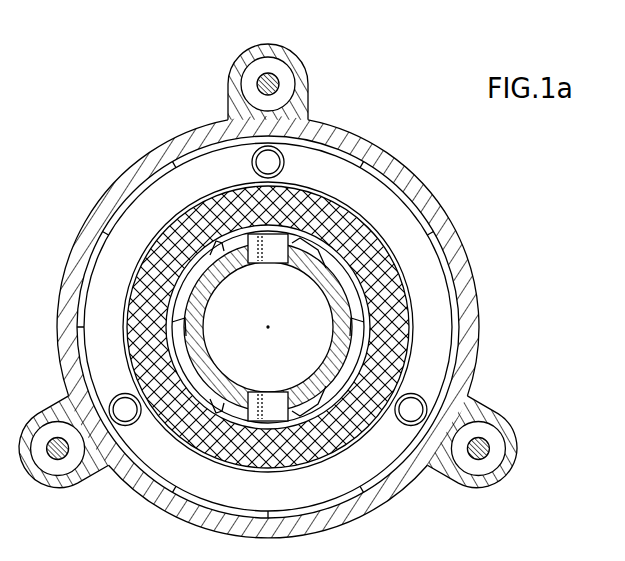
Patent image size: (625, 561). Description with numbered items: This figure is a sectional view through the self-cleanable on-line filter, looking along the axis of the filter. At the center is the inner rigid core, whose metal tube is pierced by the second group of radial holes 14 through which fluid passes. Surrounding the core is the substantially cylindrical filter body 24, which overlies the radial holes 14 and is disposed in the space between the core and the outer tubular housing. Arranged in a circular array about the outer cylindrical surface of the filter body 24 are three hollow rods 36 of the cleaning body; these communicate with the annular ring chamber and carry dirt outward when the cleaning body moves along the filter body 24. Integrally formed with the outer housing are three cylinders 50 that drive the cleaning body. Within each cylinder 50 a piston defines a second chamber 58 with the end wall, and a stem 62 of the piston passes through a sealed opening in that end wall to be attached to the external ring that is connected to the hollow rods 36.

The radial holes 14 is at (262, 263).
The filter body 24 is at (380, 268).
The hollow rods 36 is at (284, 166).
The cylinders 50 is at (287, 54).
The second chamber 58 is at (290, 87).
The stem 62 is at (488, 438).